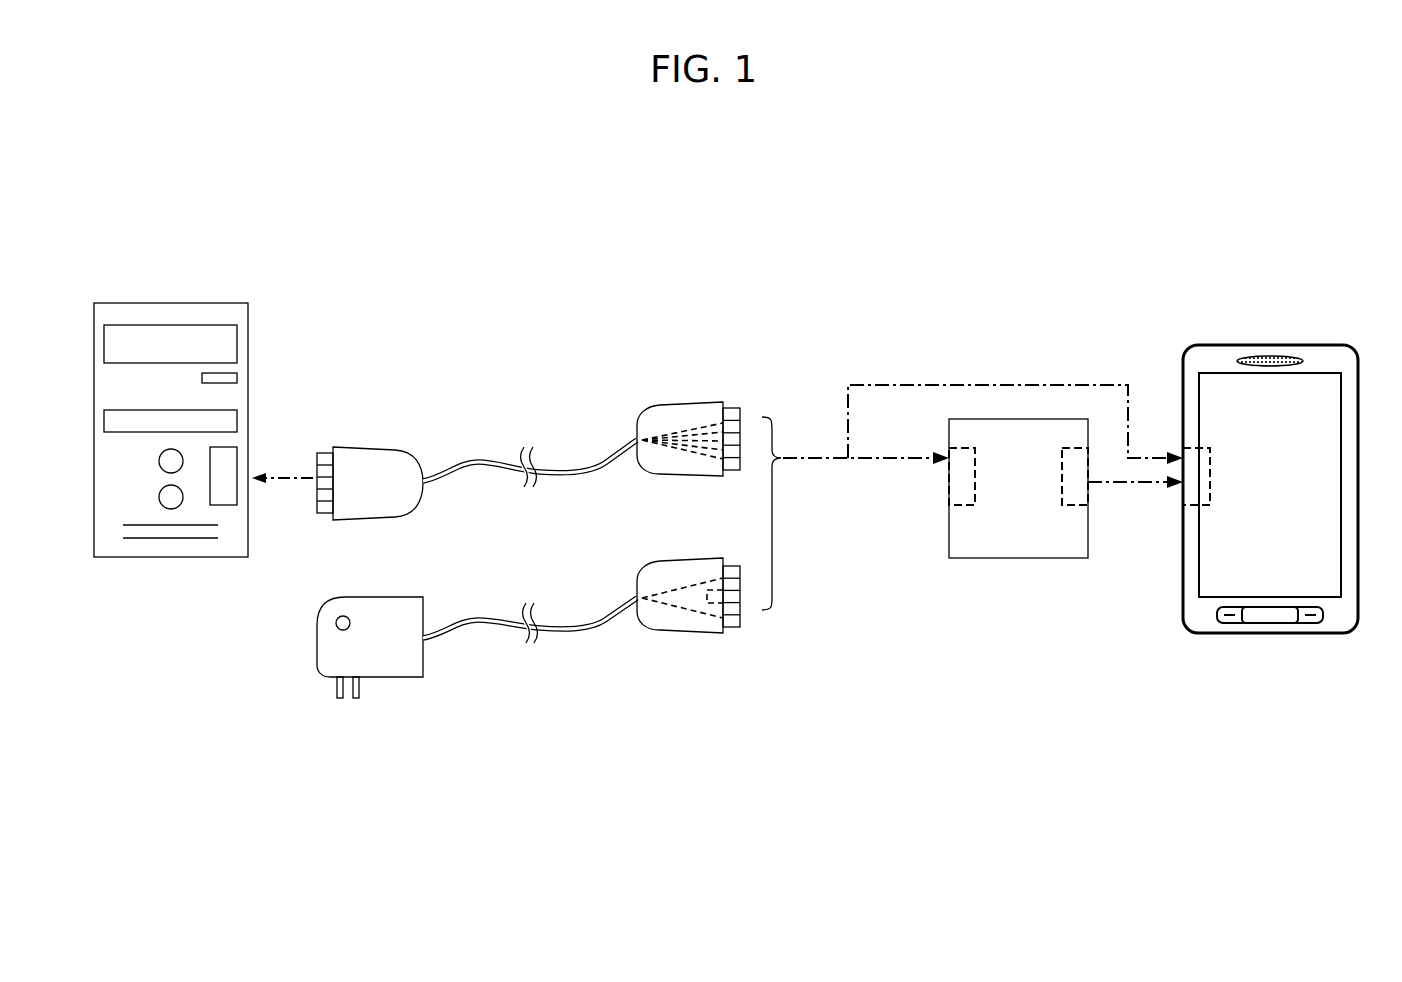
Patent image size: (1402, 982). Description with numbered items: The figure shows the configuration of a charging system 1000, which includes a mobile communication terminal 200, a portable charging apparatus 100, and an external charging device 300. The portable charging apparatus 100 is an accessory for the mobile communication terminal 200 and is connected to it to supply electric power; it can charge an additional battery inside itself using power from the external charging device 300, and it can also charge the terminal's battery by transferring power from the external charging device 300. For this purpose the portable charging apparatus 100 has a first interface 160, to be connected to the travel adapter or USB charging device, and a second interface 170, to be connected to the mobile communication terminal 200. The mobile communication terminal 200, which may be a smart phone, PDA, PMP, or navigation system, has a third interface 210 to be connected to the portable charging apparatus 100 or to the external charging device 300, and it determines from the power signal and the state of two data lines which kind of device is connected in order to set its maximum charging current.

The charging system 1000 is at (1247, 251).
The portable charging apparatus 100 is at (1017, 560).
The first interface 160 is at (960, 507).
The second interface 170 is at (1075, 507).
The mobile communication terminal 200 is at (1270, 344).
The third interface 210 is at (1190, 507).
The external charging device 300 is at (538, 650).